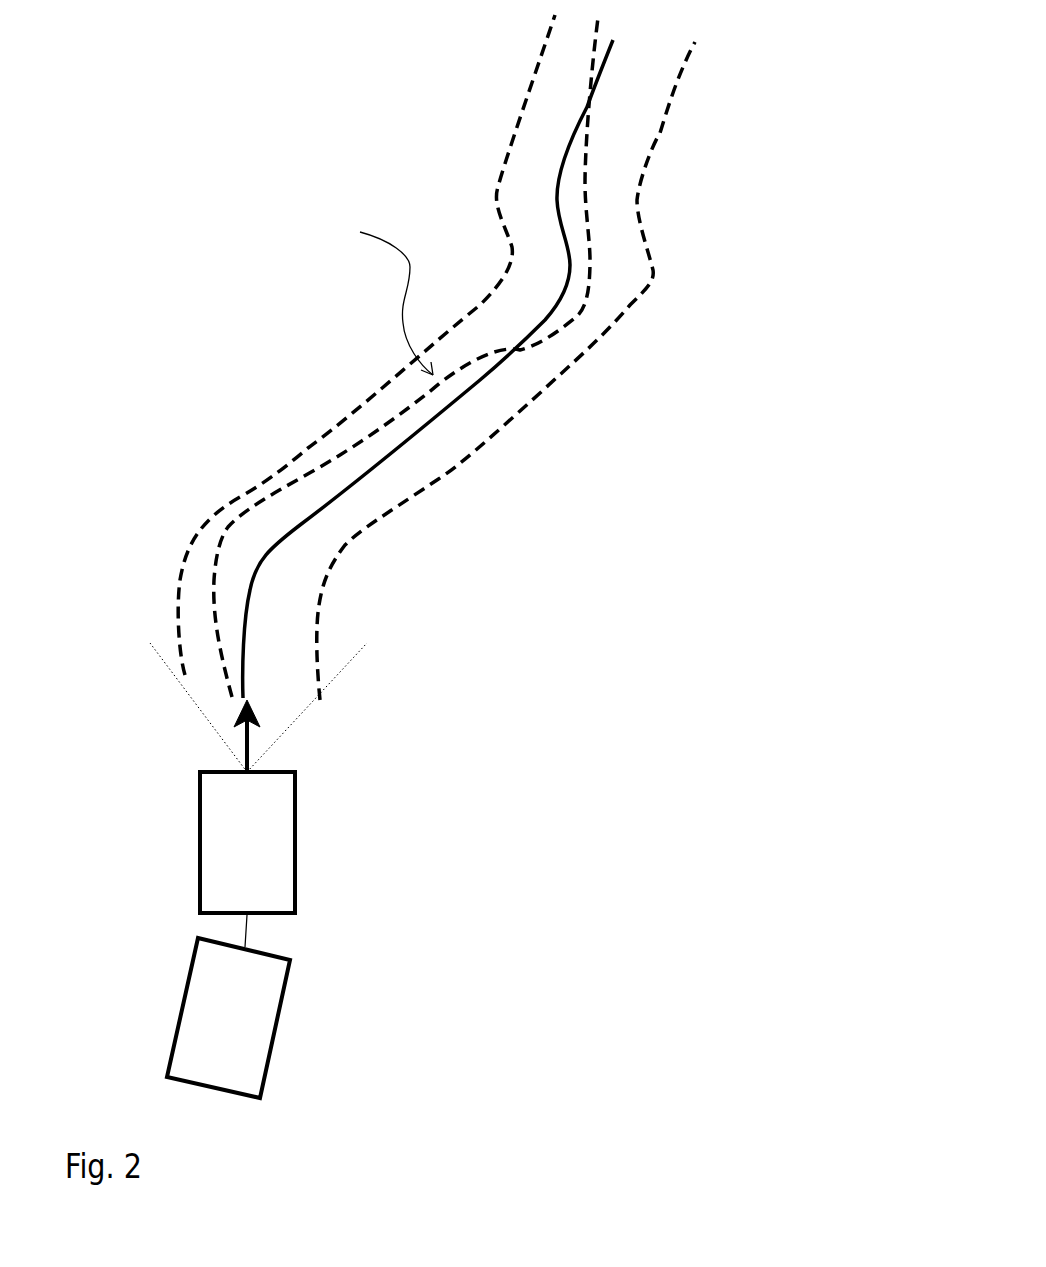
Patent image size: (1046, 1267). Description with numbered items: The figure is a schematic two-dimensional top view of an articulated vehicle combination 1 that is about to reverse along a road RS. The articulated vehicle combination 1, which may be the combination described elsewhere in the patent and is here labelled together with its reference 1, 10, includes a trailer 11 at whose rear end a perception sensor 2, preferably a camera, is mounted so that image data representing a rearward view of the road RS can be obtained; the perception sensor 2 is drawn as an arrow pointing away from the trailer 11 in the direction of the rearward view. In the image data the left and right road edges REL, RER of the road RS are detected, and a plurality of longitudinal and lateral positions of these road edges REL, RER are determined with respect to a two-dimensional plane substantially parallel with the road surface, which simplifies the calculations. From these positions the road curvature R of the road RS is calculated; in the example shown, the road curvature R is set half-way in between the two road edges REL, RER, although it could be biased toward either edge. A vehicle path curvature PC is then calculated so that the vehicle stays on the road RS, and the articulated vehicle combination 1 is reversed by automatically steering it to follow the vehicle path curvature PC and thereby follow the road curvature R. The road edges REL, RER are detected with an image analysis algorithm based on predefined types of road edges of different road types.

The articulated vehicle combination 1 is at (364, 1006).
The driver assistance system 10 is at (275, 1037).
The trailer 11 is at (295, 872).
The perception sensor 2 is at (252, 770).
The road curvature R is at (573, 143).
The road RS is at (374, 293).
The vehicle path curvature PC is at (583, 302).
The left road edge REL is at (308, 448).
The right road edge RER is at (510, 433).